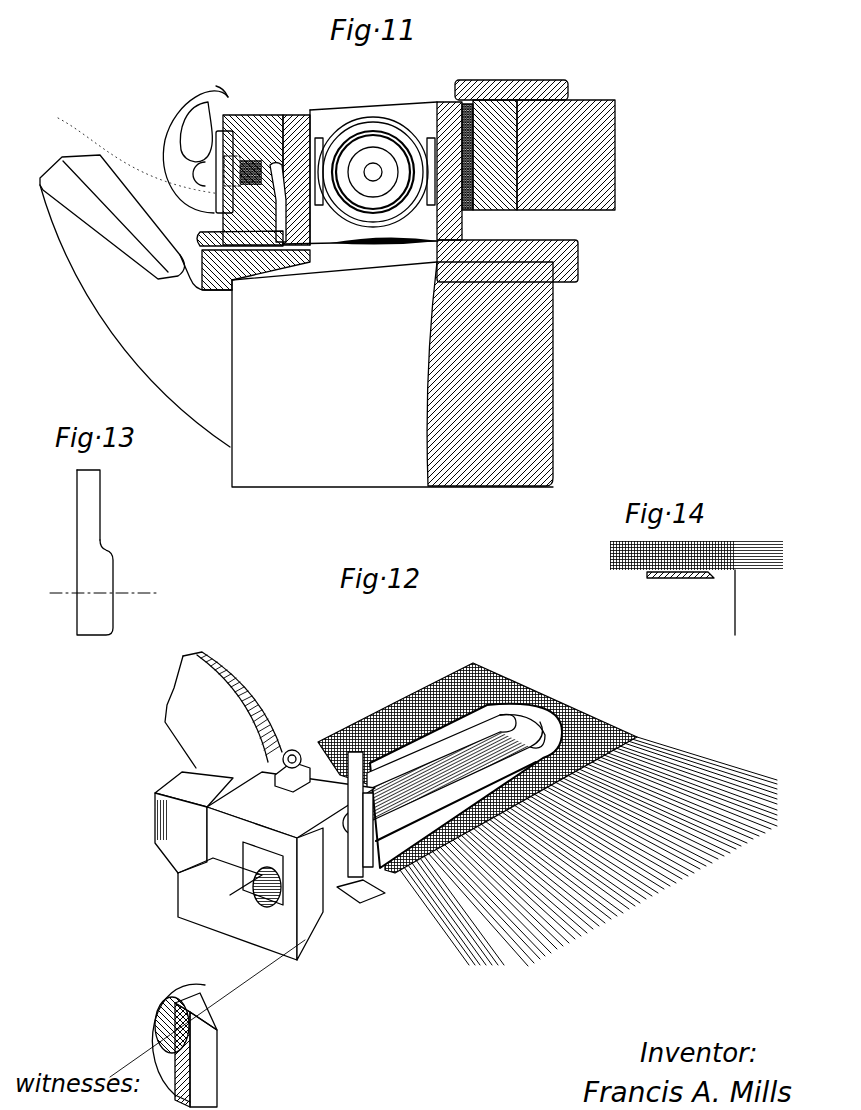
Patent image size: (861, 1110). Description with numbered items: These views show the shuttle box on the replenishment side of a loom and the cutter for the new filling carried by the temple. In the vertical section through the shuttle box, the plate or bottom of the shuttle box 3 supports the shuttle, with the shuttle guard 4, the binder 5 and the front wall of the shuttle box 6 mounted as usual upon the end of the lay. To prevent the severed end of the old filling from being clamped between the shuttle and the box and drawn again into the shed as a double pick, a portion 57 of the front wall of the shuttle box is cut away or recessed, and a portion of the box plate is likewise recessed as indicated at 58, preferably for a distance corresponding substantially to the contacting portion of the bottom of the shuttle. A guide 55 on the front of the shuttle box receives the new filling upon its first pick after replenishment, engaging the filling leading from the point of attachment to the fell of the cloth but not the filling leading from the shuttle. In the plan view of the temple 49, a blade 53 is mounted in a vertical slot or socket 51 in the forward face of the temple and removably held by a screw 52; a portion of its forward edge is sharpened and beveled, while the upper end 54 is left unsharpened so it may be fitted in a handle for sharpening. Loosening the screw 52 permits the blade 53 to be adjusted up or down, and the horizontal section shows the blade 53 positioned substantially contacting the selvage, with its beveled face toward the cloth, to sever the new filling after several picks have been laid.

In FIG. 11, the plate or bottom of the shuttle box 3 is at (482, 262).
In FIG. 11, the shuttle guard 4 is at (478, 88).
In FIG. 11, the binder 5 is at (607, 178).
In FIG. 11, the front wall of the shuttle box 6 is at (262, 125).
In FIG. 12, the temple 49 is at (322, 783).
In FIG. 12, the vertical slot or socket 51 is at (348, 796).
In FIG. 12, the screw 52 is at (343, 821).
In FIG. 13, the blade 53 is at (105, 570).
In FIG. 14, the blade 53 is at (675, 582).
In FIG. 12, the blade 53 is at (367, 874).
In FIG. 13, the upper end of the blade 54 is at (93, 504).
In FIG. 11, the guide 55 is at (178, 112).
In FIG. 12, the guide 55 is at (160, 1010).
In FIG. 11, the recessed portion of the front wall of the shuttle box 57 is at (230, 229).
In FIG. 11, the recessed portion of the box plate 58 is at (356, 248).